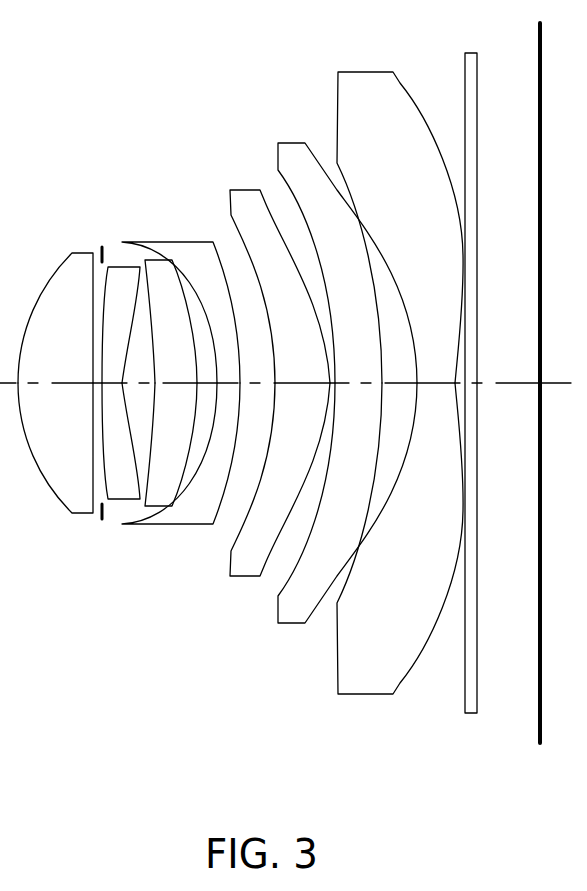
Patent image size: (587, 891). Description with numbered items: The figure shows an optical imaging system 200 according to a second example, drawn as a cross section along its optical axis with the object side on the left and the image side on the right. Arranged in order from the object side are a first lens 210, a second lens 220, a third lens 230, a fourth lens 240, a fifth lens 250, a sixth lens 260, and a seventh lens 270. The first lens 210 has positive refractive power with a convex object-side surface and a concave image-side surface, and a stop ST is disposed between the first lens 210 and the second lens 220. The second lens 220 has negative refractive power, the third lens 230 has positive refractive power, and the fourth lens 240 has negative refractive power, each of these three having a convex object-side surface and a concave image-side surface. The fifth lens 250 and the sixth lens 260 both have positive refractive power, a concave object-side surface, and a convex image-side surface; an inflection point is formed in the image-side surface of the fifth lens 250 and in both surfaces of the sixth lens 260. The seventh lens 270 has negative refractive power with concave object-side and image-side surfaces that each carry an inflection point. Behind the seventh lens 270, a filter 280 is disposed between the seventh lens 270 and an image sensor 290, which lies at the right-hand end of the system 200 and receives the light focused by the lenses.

The optical imaging system 200 is at (128, 100).
The stop ST is at (105, 251).
The first lens 210 is at (80, 514).
The second lens 220 is at (127, 502).
The third lens 230 is at (158, 507).
The fourth lens 240 is at (210, 525).
The fifth lens 250 is at (247, 577).
The sixth lens 260 is at (292, 623).
The seventh lens 270 is at (365, 695).
The filter 280 is at (470, 715).
The image sensor 290 is at (540, 720).